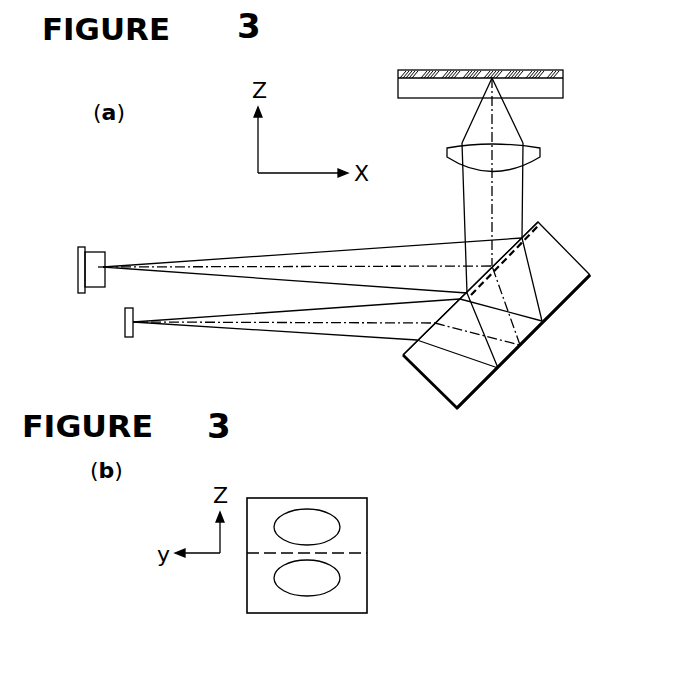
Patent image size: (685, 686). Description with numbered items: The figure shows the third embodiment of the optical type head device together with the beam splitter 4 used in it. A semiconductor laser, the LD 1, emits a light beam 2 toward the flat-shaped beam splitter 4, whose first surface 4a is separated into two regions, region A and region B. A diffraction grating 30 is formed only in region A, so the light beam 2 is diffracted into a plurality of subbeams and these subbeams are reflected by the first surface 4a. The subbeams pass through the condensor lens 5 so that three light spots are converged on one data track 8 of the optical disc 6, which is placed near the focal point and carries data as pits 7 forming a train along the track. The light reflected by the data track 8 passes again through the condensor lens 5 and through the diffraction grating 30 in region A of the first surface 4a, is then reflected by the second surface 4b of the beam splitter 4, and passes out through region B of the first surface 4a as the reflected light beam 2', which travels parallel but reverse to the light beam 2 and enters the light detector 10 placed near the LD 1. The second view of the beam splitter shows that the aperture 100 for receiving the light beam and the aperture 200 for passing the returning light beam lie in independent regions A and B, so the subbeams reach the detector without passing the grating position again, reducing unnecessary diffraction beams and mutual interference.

In FIG. 3a, the semiconductor laser 1 is at (103, 252).
In FIG. 3a, the light beam 2 is at (312, 254).
In FIG. 3a, the reflected light beam 2' is at (296, 338).
In FIG. 3a, the beam splitter 4 is at (583, 266).
In FIG. 3a, the first surface 4a is at (522, 237).
In FIG. 3b, the first surface 4a is at (280, 498).
In FIG. 3a, the second surface 4b is at (565, 300).
In FIG. 3a, the condensor lens 5 is at (540, 152).
In FIG. 3a, the optical disc 6 is at (563, 90).
In FIG. 3a, the pits 7 is at (492, 78).
In FIG. 3a, the data track 8 is at (398, 73).
In FIG. 3a, the light detector 10 is at (133, 337).
In FIG. 3a, the diffraction grating 30 is at (523, 241).
In FIG. 3b, the aperture for receiving the light beam 100 is at (320, 508).
In FIG. 3b, the aperture for passing through the light beam 200 is at (328, 594).
In FIG. 3b, the region A is at (357, 523).
In FIG. 3b, the region B is at (357, 575).